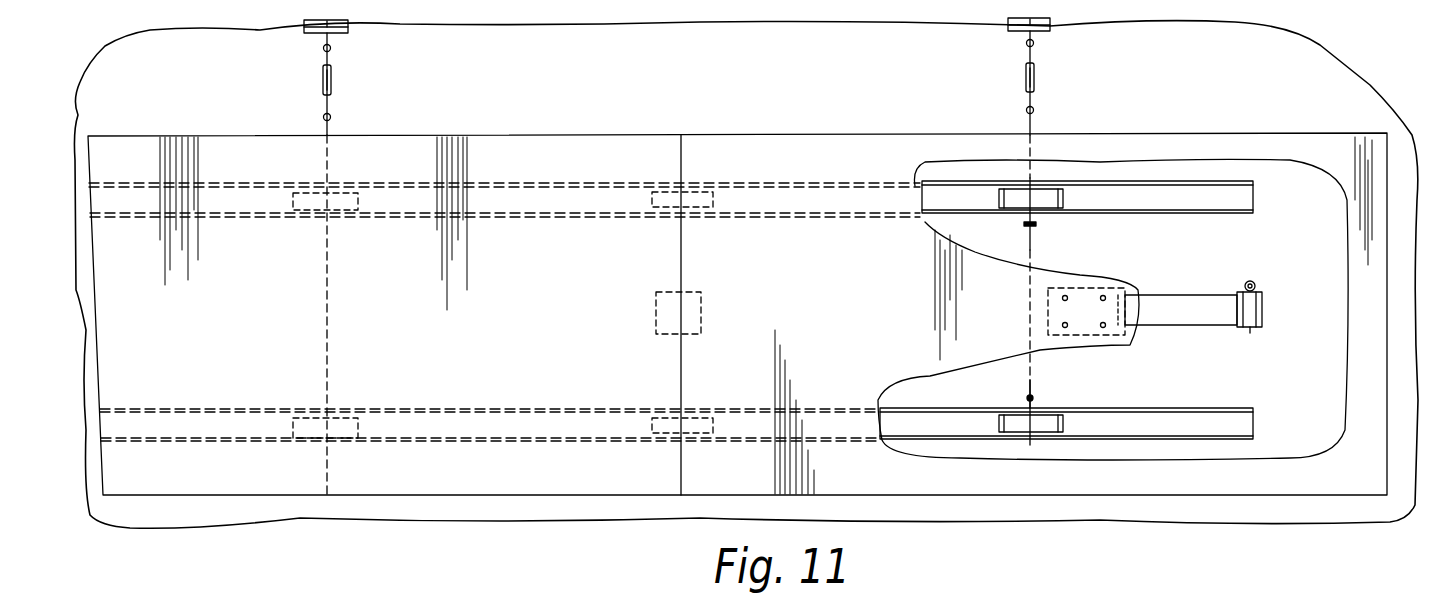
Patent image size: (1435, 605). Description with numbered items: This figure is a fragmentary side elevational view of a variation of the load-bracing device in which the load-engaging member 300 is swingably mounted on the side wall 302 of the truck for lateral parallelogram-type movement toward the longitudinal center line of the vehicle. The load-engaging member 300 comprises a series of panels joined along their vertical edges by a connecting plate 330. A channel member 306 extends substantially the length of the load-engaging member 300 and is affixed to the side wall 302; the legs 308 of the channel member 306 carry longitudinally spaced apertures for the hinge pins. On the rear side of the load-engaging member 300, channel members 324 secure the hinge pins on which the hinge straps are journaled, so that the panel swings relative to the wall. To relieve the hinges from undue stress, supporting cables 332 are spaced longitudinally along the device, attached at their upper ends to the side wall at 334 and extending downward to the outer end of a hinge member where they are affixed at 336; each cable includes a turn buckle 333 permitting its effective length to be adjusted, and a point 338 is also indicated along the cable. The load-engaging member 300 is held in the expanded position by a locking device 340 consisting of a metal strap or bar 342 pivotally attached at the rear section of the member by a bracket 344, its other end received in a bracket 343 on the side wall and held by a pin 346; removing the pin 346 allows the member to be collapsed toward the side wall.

The load-engaging member 300 is at (895, 305).
The side wall 302 is at (768, 80).
The channel member 306 is at (1243, 198).
The leg of the channel member 308 is at (1100, 182).
The channel member 324 is at (345, 200).
The connecting plate 330 is at (702, 312).
The supporting cable 332 is at (329, 300).
The turn buckle 333 is at (332, 82).
The cable attachment point 334 is at (335, 34).
The cable attachment point 336 is at (1027, 400).
The cable end 338 is at (1034, 396).
The locking device 340 is at (1236, 271).
The metal strap or bar 342 is at (1165, 325).
The bracket 343 is at (1276, 312).
The bracket 344 is at (1128, 290).
The pin 346 is at (1256, 286).